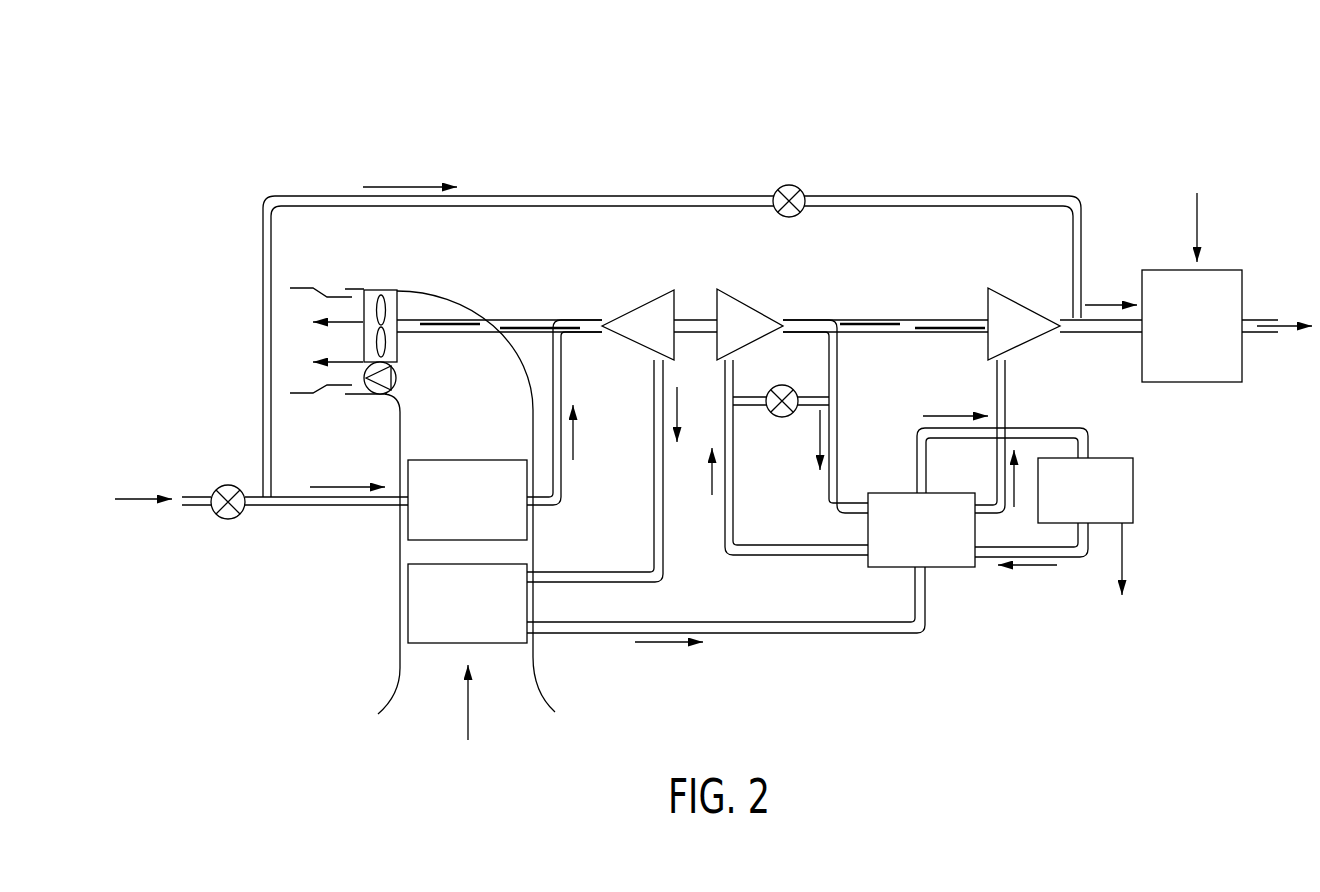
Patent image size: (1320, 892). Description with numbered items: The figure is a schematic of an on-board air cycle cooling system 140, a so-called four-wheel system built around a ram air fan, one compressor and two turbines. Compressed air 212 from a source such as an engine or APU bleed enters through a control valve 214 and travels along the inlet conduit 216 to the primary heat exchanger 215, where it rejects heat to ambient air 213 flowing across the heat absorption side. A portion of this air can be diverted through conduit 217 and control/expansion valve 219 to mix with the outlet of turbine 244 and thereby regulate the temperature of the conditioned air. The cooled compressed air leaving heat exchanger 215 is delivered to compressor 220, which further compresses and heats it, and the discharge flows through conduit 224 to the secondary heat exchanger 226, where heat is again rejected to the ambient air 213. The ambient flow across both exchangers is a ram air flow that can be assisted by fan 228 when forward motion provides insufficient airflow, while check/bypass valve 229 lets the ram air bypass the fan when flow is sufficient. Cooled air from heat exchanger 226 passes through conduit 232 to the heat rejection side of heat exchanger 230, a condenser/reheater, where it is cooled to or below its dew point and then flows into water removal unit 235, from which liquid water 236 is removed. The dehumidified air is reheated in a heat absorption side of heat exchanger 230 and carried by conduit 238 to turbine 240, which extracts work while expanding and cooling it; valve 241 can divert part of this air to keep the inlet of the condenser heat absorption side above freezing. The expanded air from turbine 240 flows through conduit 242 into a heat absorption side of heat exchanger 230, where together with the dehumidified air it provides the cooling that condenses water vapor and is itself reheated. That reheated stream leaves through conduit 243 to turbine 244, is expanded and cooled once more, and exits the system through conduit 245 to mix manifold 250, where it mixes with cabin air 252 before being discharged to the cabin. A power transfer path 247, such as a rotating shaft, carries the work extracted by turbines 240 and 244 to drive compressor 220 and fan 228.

The air cycle cooling system 140 is at (255, 128).
The compressed air 212 is at (143, 495).
The ambient air 213 is at (468, 705).
The control valve 214 is at (228, 518).
The heat exchanger 215 is at (495, 460).
The bleed air conduit 216 is at (353, 507).
The conduit 217 is at (525, 195).
The control/expansion valve 219 is at (792, 185).
The compressor 220 is at (640, 305).
The conduit 224 is at (653, 507).
The heat exchanger 226 is at (445, 645).
The fan 228 is at (393, 305).
The check/bypass valve 229 is at (397, 372).
The heat exchanger 230 is at (950, 567).
The conduit 232 is at (777, 633).
The water removal unit 235 is at (1133, 487).
The liquid water 236 is at (1123, 552).
The conduit 238 is at (798, 555).
The turbine 240 is at (735, 292).
The valve 241 is at (782, 417).
The conduit 242 is at (838, 427).
The conduit 243 is at (1006, 398).
The turbine 244 is at (1032, 342).
The conduit 245 is at (1105, 333).
The power transfer path 247 is at (512, 317).
The mix manifold 250 is at (1242, 293).
The cabin air 252 is at (1202, 217).